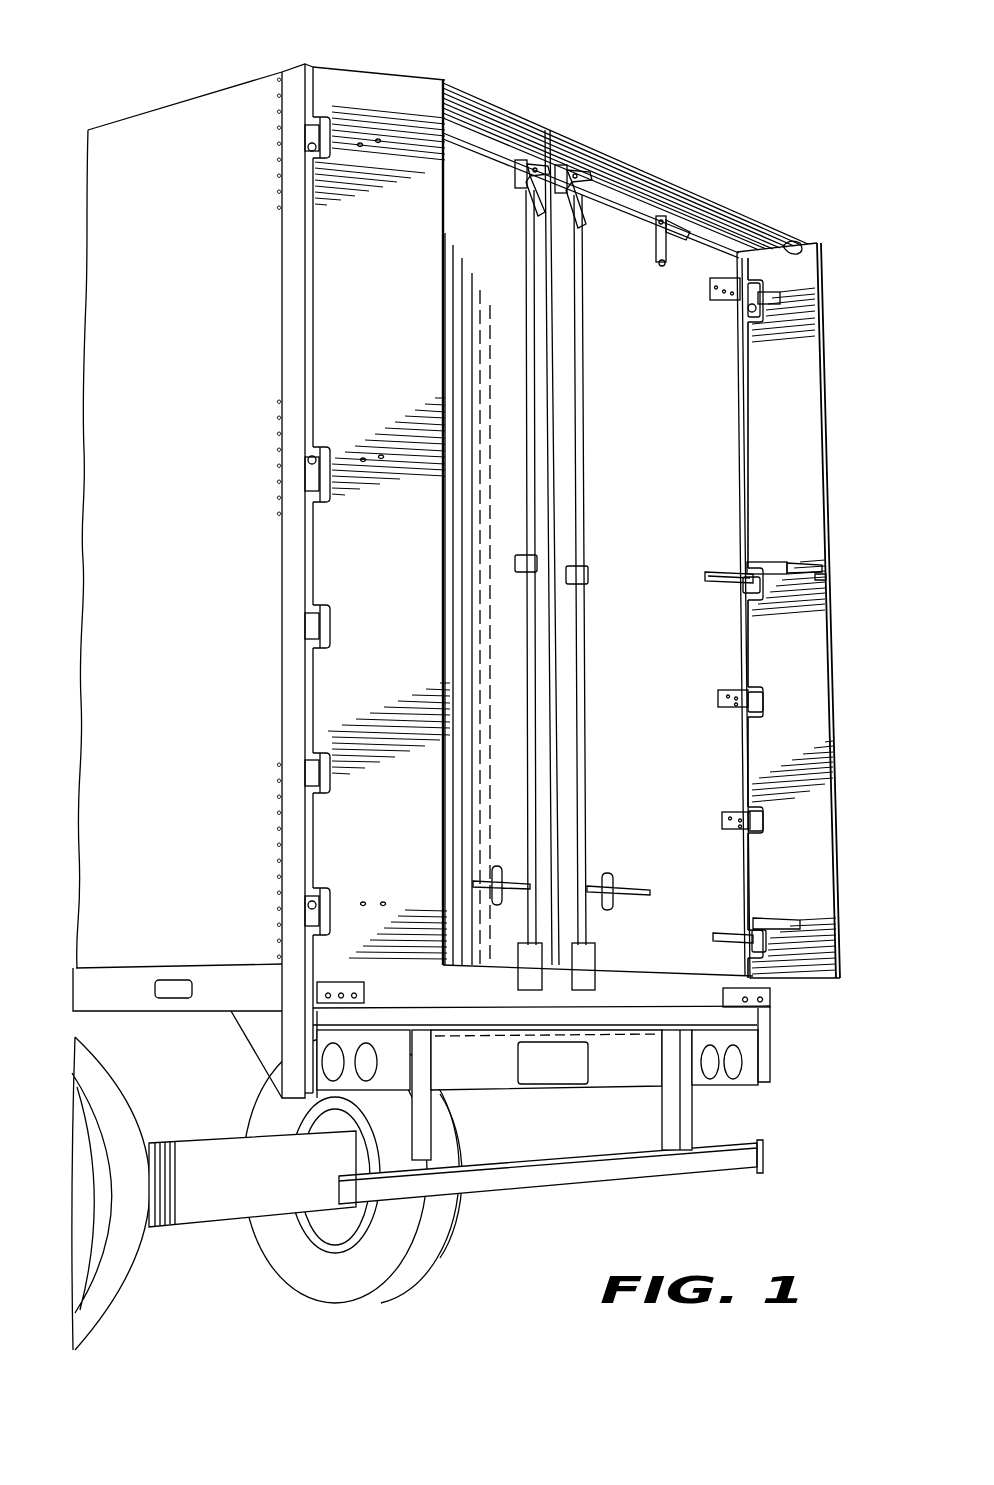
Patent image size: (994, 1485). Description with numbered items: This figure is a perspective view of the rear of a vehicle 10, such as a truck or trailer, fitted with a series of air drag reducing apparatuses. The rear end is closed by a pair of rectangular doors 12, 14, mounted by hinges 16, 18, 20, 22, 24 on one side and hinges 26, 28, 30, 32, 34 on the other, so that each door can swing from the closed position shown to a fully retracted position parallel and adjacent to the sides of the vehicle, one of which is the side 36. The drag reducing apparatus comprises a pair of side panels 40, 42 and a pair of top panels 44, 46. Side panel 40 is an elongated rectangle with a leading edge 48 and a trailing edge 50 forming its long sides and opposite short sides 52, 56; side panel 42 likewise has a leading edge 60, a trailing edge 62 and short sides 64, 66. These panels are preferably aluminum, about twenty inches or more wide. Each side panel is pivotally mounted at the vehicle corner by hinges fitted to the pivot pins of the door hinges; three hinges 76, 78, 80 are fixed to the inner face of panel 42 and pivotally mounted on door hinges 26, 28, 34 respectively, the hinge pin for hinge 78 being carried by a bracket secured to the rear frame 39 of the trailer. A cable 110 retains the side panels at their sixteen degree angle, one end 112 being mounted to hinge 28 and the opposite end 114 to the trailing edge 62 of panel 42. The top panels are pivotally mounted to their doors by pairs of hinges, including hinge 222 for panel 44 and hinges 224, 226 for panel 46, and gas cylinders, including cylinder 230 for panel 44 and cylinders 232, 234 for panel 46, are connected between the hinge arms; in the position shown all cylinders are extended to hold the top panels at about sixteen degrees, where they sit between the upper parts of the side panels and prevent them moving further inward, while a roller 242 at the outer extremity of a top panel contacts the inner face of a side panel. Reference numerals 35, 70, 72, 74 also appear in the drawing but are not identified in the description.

The vehicle 10 is at (58, 690).
The door 12 is at (508, 415).
The door 14 is at (699, 459).
The hinge 16 is at (307, 133).
The hinge 18 is at (308, 476).
The hinge 20 is at (306, 626).
The hinge 22 is at (305, 772).
The hinge 24 is at (306, 926).
The hinge 26 is at (762, 290).
The hinge 28 is at (740, 588).
The hinge 30 is at (745, 701).
The hinge 32 is at (750, 815).
The hinge 34 is at (752, 946).
The trailer body 35 is at (130, 110).
The side of the vehicle 36 is at (112, 399).
The rear frame 39 is at (766, 1066).
The side panel 40 is at (352, 352).
The side panel 42 is at (783, 498).
The top panel 44 is at (494, 104).
The top panel 46 is at (704, 196).
The leading edge 48 is at (310, 690).
The trailing edge 50 is at (452, 486).
The side 52 is at (430, 972).
The side 56 is at (377, 65).
The leading edge 60 is at (746, 470).
The trailing edge 62 is at (823, 522).
The short side 64 is at (813, 1000).
The short side 66 is at (818, 245).
The hinge pin 70 is at (307, 150).
The hinge pin 72 is at (307, 458).
The hinge pin 74 is at (307, 905).
The hinge 76 is at (745, 312).
The hinge 78 is at (833, 566).
The hinge 80 is at (753, 918).
The cable 110 is at (768, 565).
The end of cable 112 is at (708, 576).
The opposite end of cable 114 is at (822, 582).
The hinge 222 is at (517, 182).
The hinge 224 is at (580, 236).
The hinge 226 is at (665, 270).
The gas cylinder 230 is at (535, 214).
The gas cylinder 232 is at (640, 178).
The gas cylinder 234 is at (660, 241).
The roller 242 is at (790, 240).